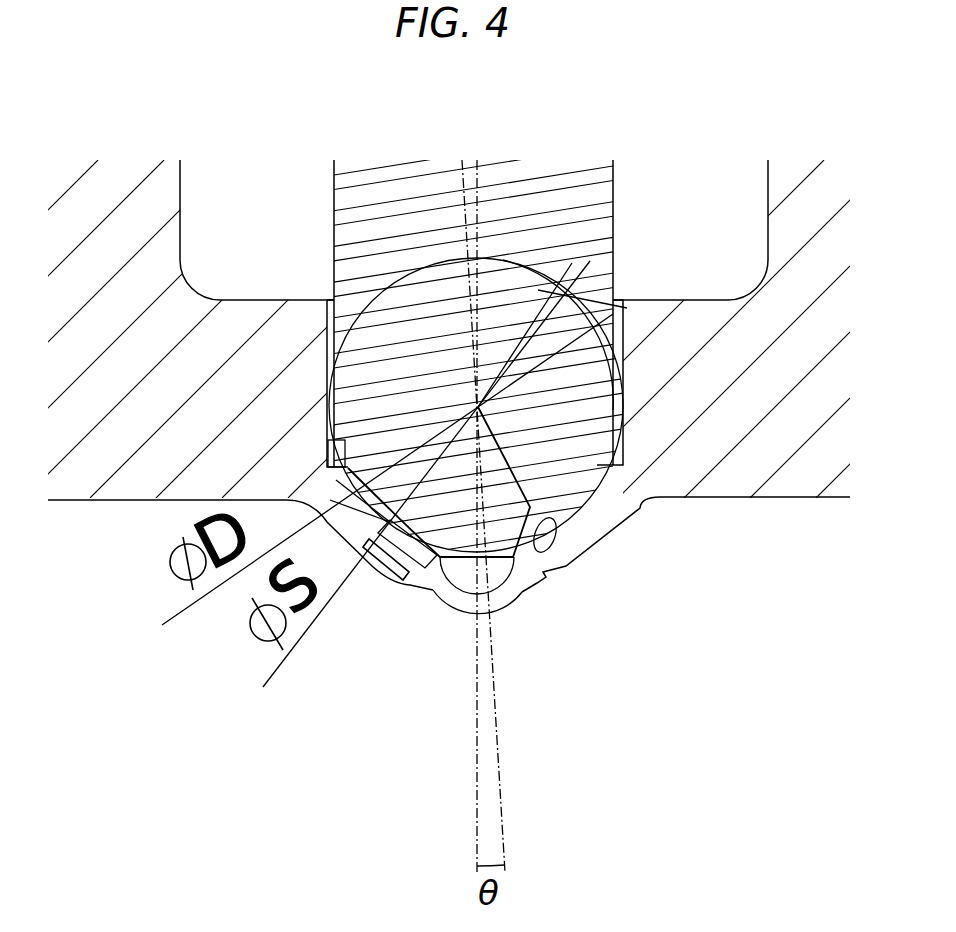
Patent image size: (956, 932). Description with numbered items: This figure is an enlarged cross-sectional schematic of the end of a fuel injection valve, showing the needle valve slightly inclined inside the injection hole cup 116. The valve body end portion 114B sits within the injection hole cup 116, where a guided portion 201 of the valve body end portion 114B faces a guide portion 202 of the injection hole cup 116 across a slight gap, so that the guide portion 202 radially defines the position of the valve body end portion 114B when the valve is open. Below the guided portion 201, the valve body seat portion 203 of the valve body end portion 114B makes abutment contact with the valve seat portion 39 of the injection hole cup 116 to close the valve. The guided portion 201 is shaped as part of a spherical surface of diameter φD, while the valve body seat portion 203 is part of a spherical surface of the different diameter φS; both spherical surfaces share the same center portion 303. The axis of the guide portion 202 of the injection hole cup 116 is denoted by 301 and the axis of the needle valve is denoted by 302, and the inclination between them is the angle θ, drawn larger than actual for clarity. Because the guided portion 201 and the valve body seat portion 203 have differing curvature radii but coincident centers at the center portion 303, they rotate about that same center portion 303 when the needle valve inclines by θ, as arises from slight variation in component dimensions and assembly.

The valve body end portion 114B is at (342, 241).
The injection hole cup 116 is at (780, 485).
The guided portion 201 is at (622, 400).
The guide portion 202 is at (626, 429).
The valve body seat portion 203 is at (575, 490).
The valve seat portion 39 is at (560, 492).
The axis of the guide portion 301 is at (476, 826).
The axis of the needle valve 302 is at (503, 822).
The center portion 303 is at (509, 570).